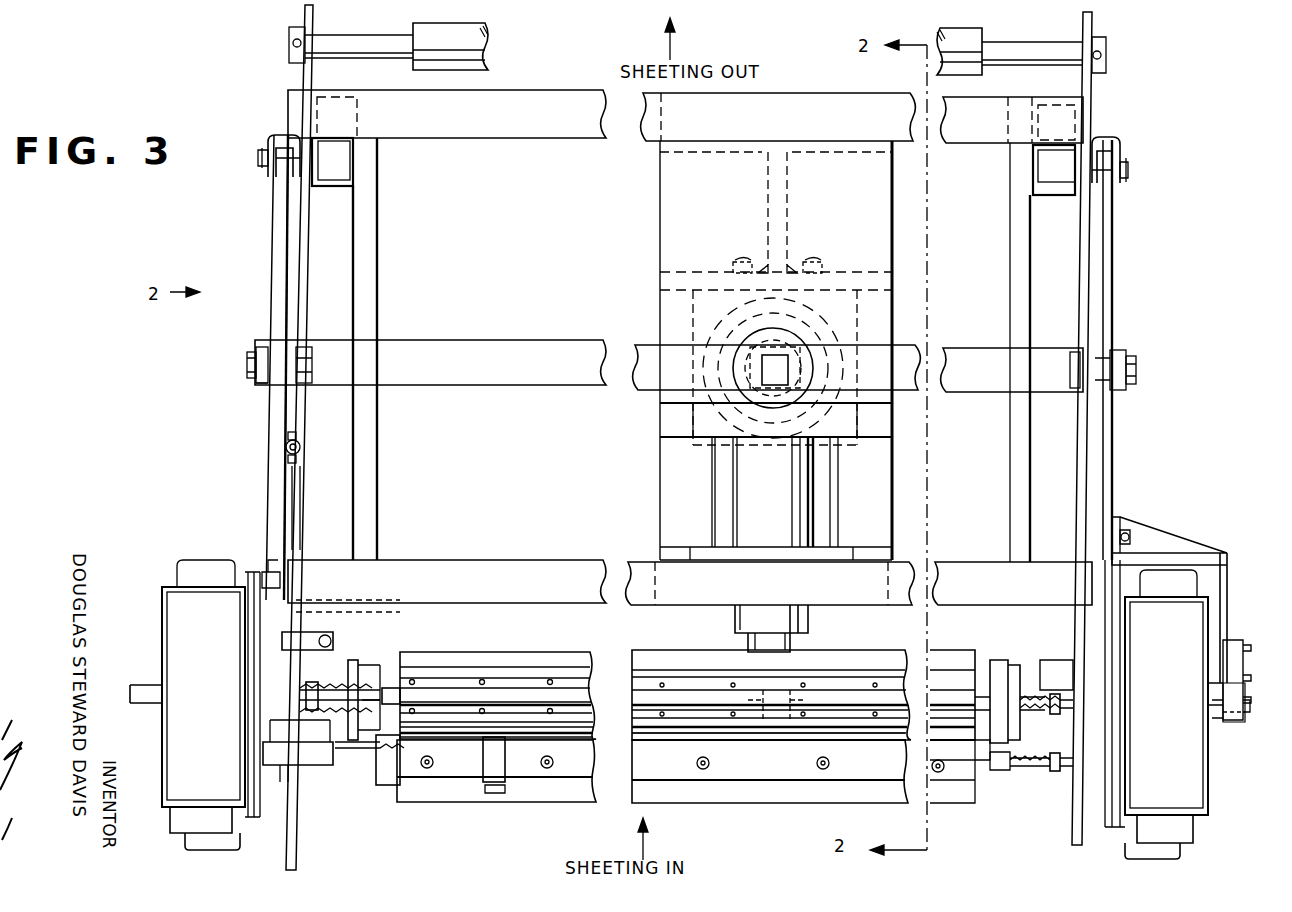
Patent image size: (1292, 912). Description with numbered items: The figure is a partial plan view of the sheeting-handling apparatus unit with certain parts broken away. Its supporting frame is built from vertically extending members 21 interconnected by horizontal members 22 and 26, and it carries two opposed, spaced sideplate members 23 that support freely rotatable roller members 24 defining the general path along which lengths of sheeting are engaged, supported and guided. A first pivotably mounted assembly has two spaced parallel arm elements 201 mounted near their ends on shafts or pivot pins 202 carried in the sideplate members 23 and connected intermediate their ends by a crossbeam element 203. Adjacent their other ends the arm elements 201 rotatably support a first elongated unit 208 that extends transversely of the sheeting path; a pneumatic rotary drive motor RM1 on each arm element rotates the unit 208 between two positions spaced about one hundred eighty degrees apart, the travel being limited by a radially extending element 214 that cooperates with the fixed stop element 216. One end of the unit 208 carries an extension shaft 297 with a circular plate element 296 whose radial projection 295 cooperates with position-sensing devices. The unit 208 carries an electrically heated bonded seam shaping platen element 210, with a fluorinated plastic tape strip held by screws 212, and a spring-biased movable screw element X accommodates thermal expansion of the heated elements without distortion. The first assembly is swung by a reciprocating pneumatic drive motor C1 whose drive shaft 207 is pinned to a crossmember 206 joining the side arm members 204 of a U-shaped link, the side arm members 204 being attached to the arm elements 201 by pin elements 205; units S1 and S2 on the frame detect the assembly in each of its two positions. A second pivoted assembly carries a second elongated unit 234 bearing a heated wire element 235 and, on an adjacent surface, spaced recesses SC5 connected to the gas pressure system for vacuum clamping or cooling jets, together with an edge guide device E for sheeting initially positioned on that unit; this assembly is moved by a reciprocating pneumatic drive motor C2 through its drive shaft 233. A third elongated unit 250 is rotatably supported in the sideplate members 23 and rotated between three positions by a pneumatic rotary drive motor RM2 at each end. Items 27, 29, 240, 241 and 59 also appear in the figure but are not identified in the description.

The sideplate members 23 is at (302, 74).
The roller members 24 is at (486, 54).
The horizontal members 22 is at (519, 130).
The vertically extending members 21 is at (353, 165).
The pivot pins 202 is at (257, 158).
The arm elements 201 is at (278, 218).
The horizontal members 26 is at (338, 295).
The pin elements 205 is at (247, 364).
The side arm members 204 is at (256, 386).
The sensing unit S1 is at (285, 439).
The sensing unit S2 is at (285, 458).
The crossmember 206 is at (500, 375).
The crossbeam element 203 is at (480, 592).
The center frame 27 is at (840, 197).
The guide members 29 is at (740, 256).
The reciprocating pneumatic drive motor C1 is at (892, 305).
The drive shaft 207 is at (816, 345).
The reciprocating pneumatic drive motor C2 is at (774, 498).
The drive shaft 233 is at (791, 647).
The bonded seam shaping platen element 210 is at (844, 695).
The first elongated unit 208 is at (385, 670).
The screws 212 is at (550, 680).
The second elongated unit 234 is at (780, 772).
The wire element 235 is at (682, 738).
The spaced recesses SC5 is at (820, 770).
The edge guide E is at (503, 778).
The pneumatic rotary drive motor RM1 is at (218, 784).
The pneumatic rotary drive motor RM2 is at (192, 848).
The fixed stop element 216 is at (335, 640).
The transversely extending element 214 is at (326, 768).
The third elongated unit 250 is at (944, 662).
The spring-biased movable screw element X is at (1047, 765).
The support bracket 240 is at (1190, 553).
The bolt 241 is at (1132, 534).
The switch bracket 59 is at (1228, 640).
The radial projection 295 is at (1220, 726).
The extension shaft 297 is at (1198, 734).
The circular plate element 296 is at (1244, 720).